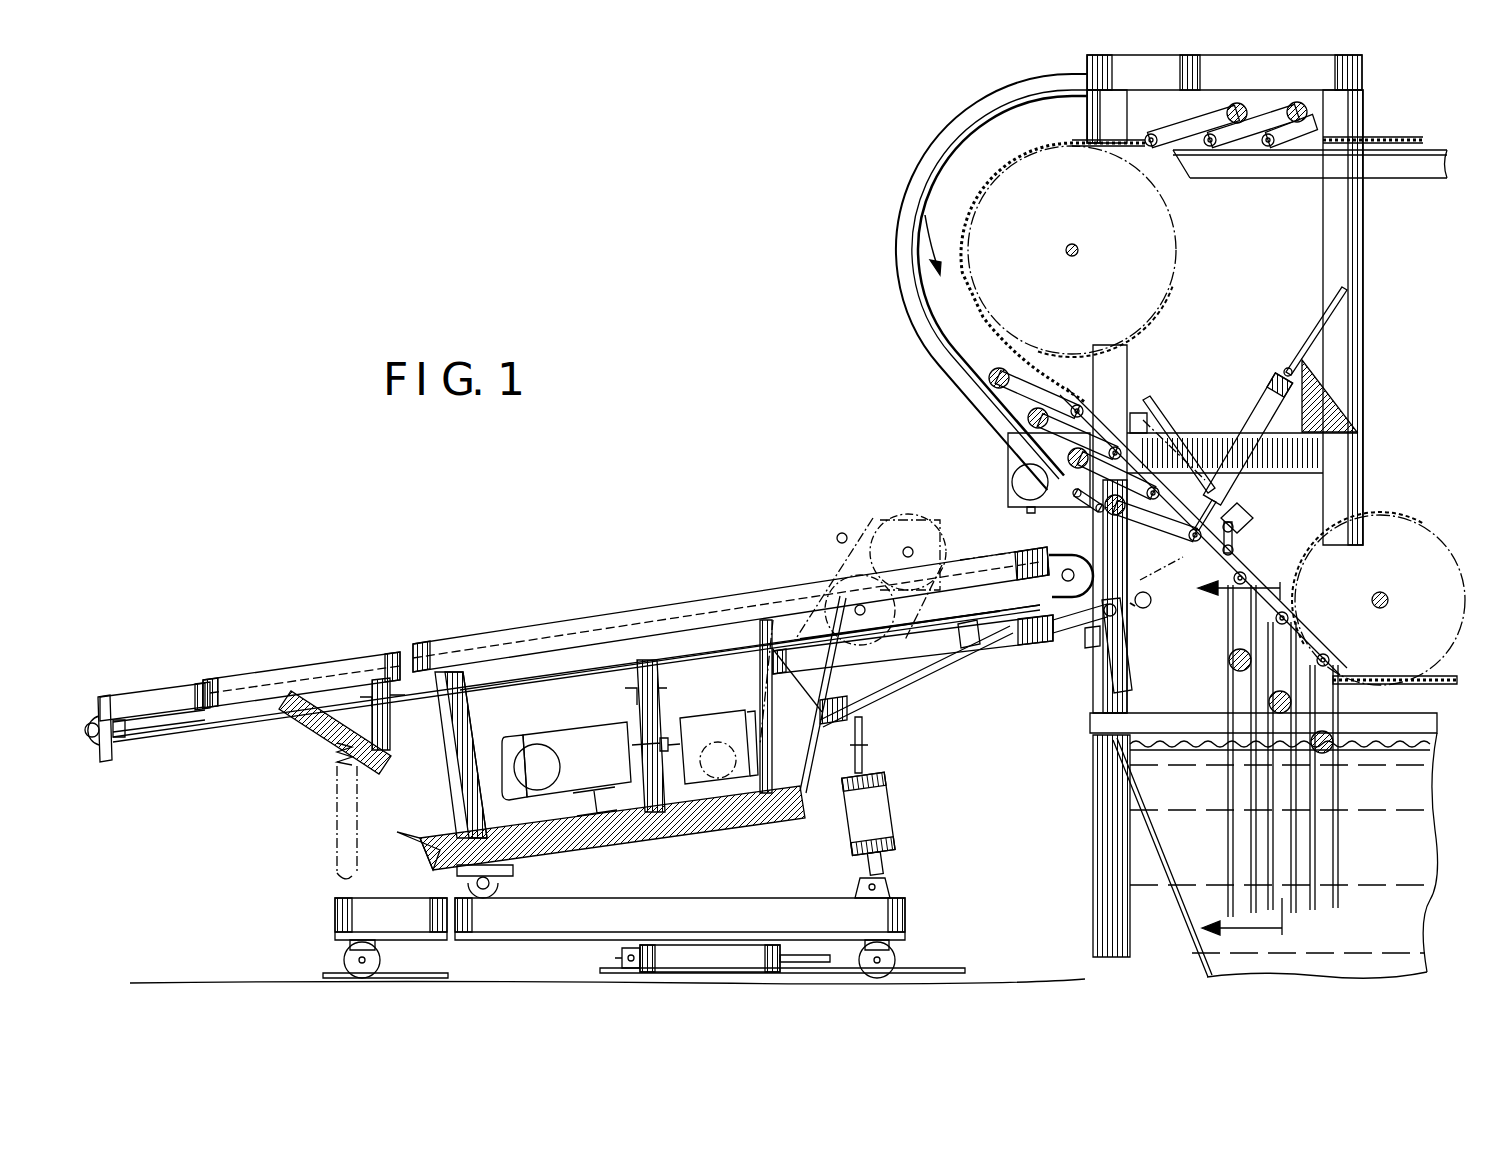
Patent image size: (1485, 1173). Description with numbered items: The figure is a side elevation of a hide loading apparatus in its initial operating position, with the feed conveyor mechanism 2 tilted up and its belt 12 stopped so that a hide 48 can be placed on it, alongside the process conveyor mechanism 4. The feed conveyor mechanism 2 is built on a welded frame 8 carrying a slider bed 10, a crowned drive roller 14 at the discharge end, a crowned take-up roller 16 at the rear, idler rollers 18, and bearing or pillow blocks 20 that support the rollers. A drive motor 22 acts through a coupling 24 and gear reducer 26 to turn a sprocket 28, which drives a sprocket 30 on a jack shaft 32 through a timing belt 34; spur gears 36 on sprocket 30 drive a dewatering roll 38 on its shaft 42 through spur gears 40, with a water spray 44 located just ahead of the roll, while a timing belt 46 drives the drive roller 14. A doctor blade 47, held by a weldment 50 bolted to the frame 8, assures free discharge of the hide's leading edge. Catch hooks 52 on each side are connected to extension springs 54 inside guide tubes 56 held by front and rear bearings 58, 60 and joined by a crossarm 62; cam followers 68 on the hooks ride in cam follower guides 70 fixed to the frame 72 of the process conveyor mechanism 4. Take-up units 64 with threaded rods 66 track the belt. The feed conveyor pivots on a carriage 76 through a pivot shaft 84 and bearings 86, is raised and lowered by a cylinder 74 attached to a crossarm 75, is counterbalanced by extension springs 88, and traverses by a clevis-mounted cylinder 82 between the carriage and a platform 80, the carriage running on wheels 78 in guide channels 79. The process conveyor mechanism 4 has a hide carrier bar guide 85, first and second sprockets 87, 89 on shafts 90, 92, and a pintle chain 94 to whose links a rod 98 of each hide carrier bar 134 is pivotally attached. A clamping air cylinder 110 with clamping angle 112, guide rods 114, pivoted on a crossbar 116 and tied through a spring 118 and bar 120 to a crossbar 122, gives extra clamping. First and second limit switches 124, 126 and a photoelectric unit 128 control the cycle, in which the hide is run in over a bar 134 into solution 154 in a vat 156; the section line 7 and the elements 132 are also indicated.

The feed conveyor mechanism 2 is at (581, 644).
The process conveyor mechanism 4 is at (1380, 258).
The section line 7 is at (1238, 756).
The welded frame 8 is at (330, 733).
The slider bed 10 is at (455, 640).
The belt 12 is at (98, 707).
The crowned drive roller 14 is at (1060, 566).
The crowned take-up roller 16 is at (96, 746).
The idler rollers 18 is at (392, 712).
The bearing or pillow blocks 20 is at (392, 740).
The drive motor 22 is at (545, 742).
The coupling 24 is at (612, 800).
The gear reducer 26 is at (720, 718).
The sprocket 28 is at (722, 805).
The sprocket 30 is at (872, 645).
The jack shaft 32 is at (862, 605).
The timing belt 34 is at (800, 612).
The spur gears 36 is at (848, 582).
The dewatering roll 38 is at (908, 516).
The spur gears 40 is at (895, 540).
The shaft 42 is at (916, 552).
The water spray 44 is at (833, 524).
The timing belt 46 is at (1008, 552).
The doctor blade 47 is at (1082, 640).
The hide 48 is at (1250, 810).
The weldment 50 is at (1003, 650).
The catch hook 52 is at (1152, 604).
The extension spring 54 is at (688, 718).
The catch hook guide tube 56 is at (900, 690).
The front bearing 58 is at (1052, 642).
The rear bearing 60 is at (812, 670).
The crossarm 62 is at (965, 658).
The take-up unit 64 is at (158, 692).
The threaded rod 66 is at (178, 730).
The cam follower 68 is at (1120, 618).
The cam follower guide 70 is at (1126, 668).
The frame 72 is at (1362, 72).
The cylinder 74 is at (887, 818).
The crossarm 75 is at (866, 710).
The carriage 76 is at (905, 915).
The casters or wheels 78 is at (344, 960).
The guide channel 79 is at (400, 972).
The platform 80 is at (215, 982).
The clevis-mounted cylinder 82 is at (722, 950).
The pivot shaft 84 is at (490, 885).
The hide carrier bar guide 85 is at (922, 322).
The bearings 86 is at (515, 872).
The first sprocket 87 is at (1174, 242).
The extension spring 88 is at (336, 820).
The second sprocket 89 is at (1395, 538).
The shaft 90 is at (1067, 244).
The shaft 92 is at (1383, 610).
The pintle chain 94 is at (1072, 138).
The rod 98 is at (1148, 134).
The clamping air cylinder 110 is at (1262, 410).
The clamping angle 112 is at (1215, 506).
The guide rod 114 is at (1318, 330).
The crossbar 116 is at (1325, 400).
The spring 118 is at (1166, 436).
The bar 120 is at (1190, 445).
The crossbar 122 is at (1140, 412).
The first limit switch 124 is at (1088, 505).
The second limit switch 126 is at (1255, 520).
The photoelectric unit 128 is at (1020, 490).
The arm 132 is at (1163, 128).
The hide carrier bar 134 is at (1295, 102).
The solution 154 is at (1264, 845).
The vat 156 is at (1155, 845).